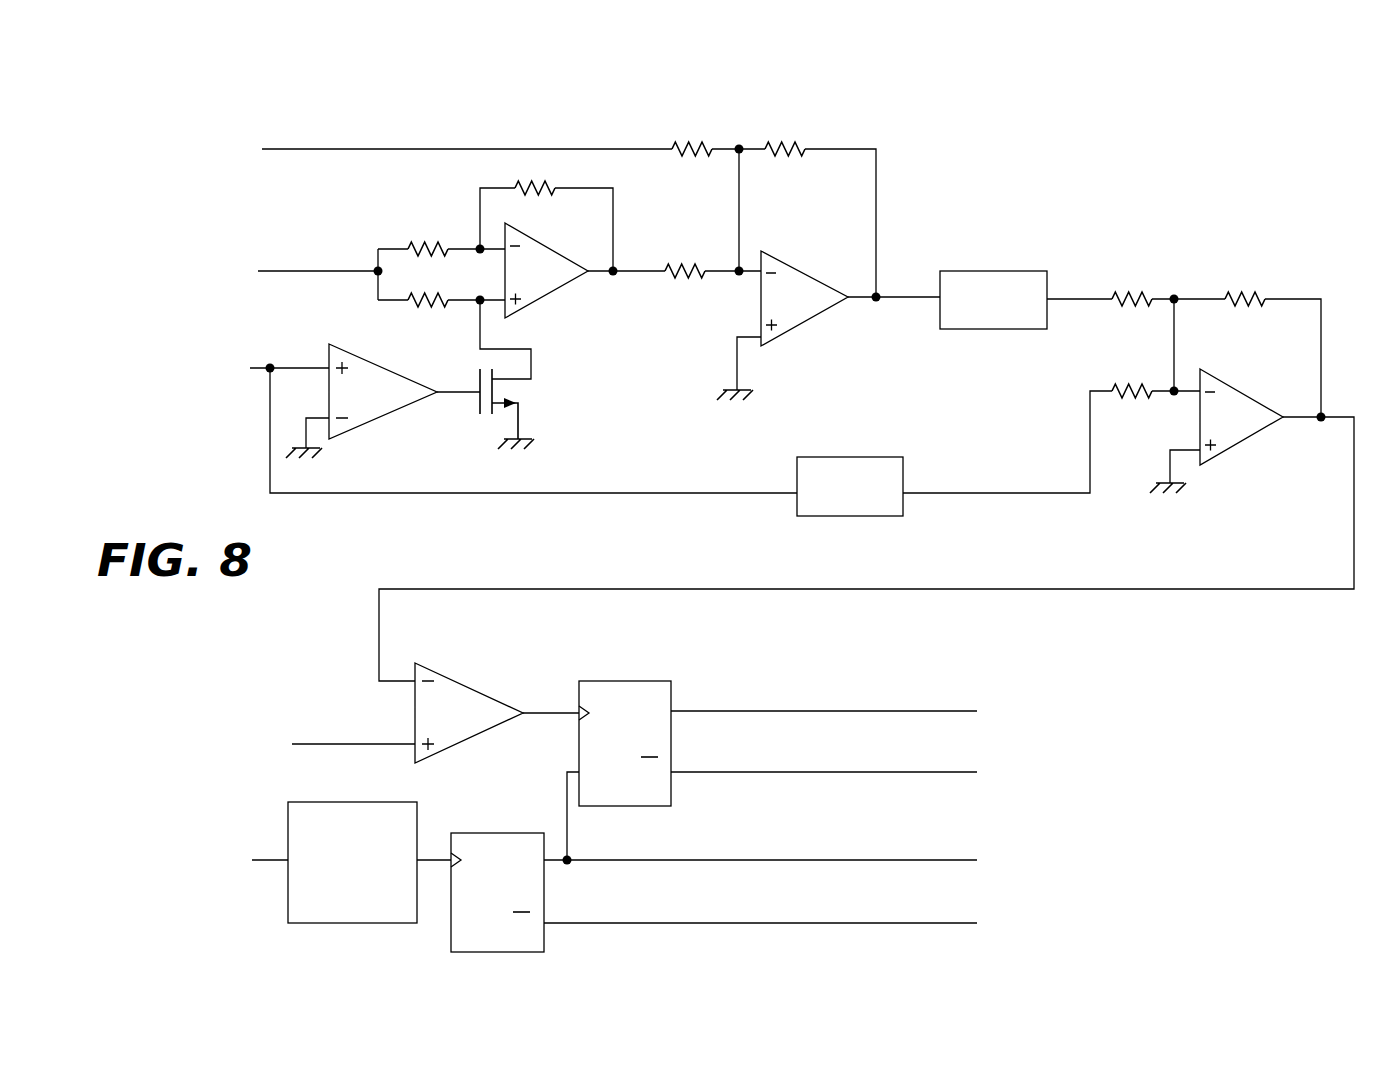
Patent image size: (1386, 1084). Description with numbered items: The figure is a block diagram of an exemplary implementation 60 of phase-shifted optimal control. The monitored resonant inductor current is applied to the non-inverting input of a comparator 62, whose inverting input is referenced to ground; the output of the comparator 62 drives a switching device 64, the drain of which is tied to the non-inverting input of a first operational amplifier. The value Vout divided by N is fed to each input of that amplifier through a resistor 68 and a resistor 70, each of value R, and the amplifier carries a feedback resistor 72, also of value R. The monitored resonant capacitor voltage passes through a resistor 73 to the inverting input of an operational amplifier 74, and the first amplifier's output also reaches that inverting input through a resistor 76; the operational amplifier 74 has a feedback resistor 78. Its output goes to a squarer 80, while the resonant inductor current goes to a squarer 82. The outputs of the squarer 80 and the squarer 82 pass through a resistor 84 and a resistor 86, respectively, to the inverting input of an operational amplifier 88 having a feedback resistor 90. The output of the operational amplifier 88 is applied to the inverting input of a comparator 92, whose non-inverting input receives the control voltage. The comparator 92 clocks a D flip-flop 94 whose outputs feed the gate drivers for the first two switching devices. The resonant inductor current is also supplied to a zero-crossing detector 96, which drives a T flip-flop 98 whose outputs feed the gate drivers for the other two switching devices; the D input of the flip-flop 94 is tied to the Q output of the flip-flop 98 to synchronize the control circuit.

The exemplary implementation 60 is at (1218, 118).
The comparator 62 is at (376, 423).
The switching device 64 is at (516, 380).
The resistor 68 is at (425, 244).
The resistor 70 is at (406, 305).
The feedback resistor 72 is at (531, 186).
The resistor 73 is at (691, 147).
The operational amplifier 74 is at (791, 265).
The resistor 76 is at (689, 268).
The feedback resistor 78 is at (787, 147).
The squarer 80 is at (988, 270).
The squarer 82 is at (845, 456).
The resistor 84 is at (1134, 295).
The resistor 86 is at (1119, 387).
The operational amplifier 88 is at (1229, 384).
The feedback resistor 90 is at (1248, 295).
The comparator 92 is at (462, 684).
The clocked D flip-flop 94 is at (629, 680).
The zero-crossing detector 96 is at (288, 822).
The T flip-flop 98 is at (545, 938).